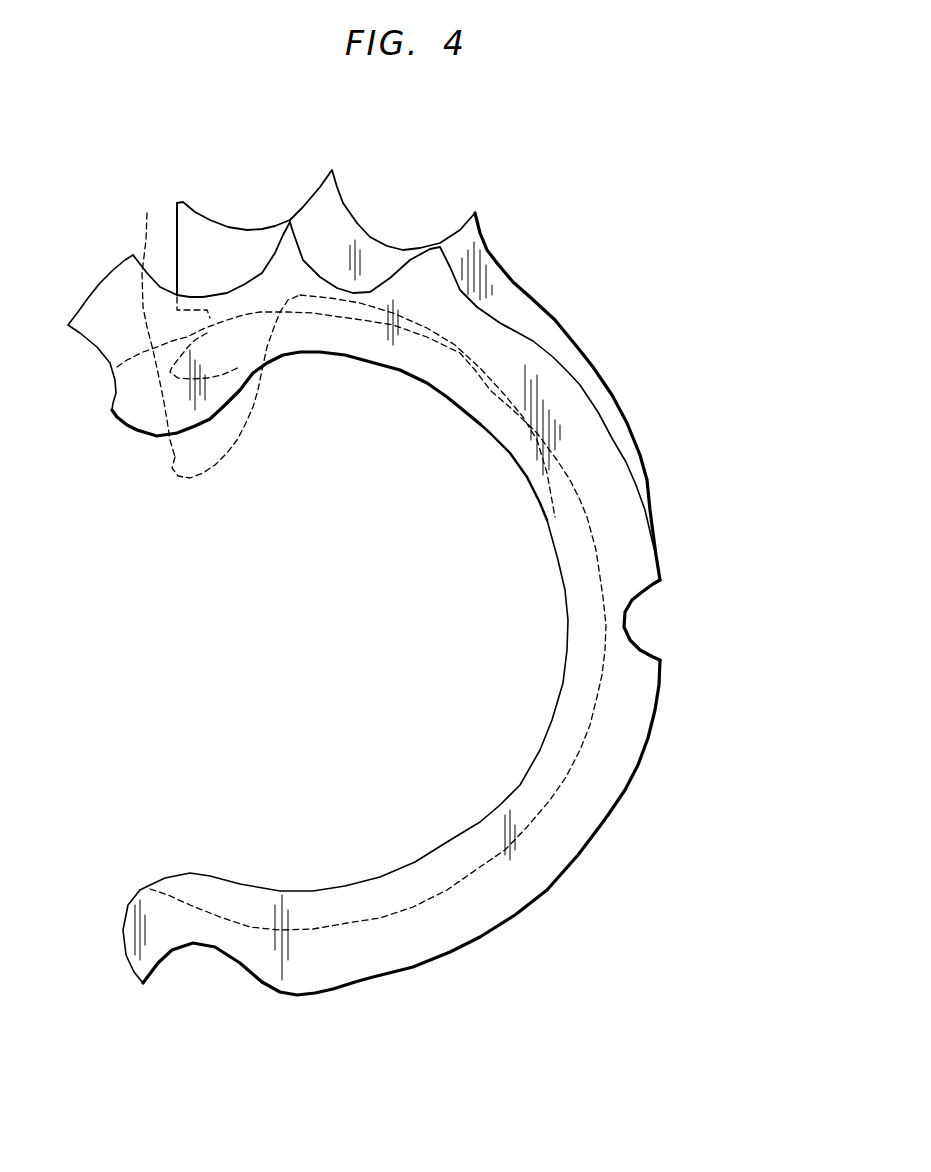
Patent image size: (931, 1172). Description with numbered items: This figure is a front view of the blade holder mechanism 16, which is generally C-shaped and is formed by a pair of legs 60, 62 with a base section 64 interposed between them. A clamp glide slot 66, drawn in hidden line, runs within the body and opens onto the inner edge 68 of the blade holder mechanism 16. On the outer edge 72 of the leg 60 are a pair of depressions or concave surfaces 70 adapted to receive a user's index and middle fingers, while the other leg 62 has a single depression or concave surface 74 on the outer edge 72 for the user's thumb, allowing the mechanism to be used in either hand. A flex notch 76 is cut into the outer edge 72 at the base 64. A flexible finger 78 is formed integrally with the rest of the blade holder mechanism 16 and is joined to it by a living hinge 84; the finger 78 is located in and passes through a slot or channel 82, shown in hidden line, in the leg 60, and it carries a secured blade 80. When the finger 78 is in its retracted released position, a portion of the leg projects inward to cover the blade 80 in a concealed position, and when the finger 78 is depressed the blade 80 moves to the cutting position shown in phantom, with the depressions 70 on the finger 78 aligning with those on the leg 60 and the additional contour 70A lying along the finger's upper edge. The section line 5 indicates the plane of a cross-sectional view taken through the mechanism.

The section line 5- 5 is at (265, 606).
The blade holder mechanism 16 is at (431, 574).
The leg 60 is at (271, 285).
The leg 62 is at (404, 962).
The base section 64 is at (596, 396).
The clamp glide slot 66 is at (361, 612).
The inner edge 68 is at (340, 621).
The depressions or concave surfaces 70 is at (401, 246).
The tooth 70A is at (255, 170).
The outer edge 72 is at (635, 775).
The depression or concave surface 74 is at (192, 964).
The flex notch 76 is at (676, 620).
The flexible finger 78 is at (211, 233).
The blade 80 is at (208, 412).
The slot or channel 82 is at (137, 324).
The living hinge 84 is at (607, 455).